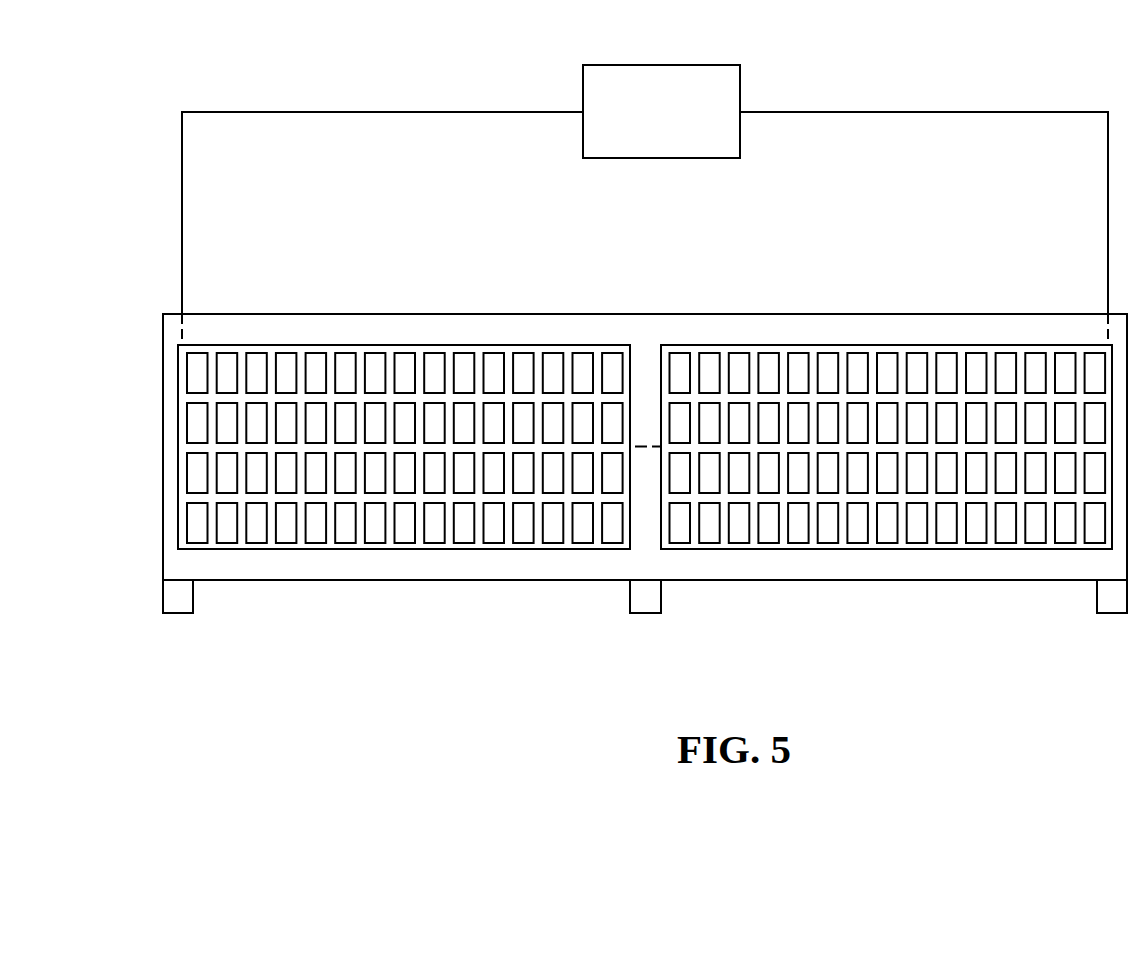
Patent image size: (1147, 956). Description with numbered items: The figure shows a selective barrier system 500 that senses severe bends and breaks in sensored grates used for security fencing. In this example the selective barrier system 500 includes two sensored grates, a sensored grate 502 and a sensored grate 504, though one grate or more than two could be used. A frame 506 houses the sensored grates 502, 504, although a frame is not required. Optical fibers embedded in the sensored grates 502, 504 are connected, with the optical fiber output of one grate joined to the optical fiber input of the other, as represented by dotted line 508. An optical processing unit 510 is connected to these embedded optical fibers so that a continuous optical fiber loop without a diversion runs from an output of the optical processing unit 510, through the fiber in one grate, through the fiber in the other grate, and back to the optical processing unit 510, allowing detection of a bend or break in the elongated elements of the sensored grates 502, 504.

The selective barrier system 500 is at (645, 311).
The sensored grate 502 is at (382, 346).
The sensored grate 504 is at (895, 345).
The frame 506 is at (787, 313).
The dotted line 508 is at (642, 446).
The optical processing unit 510 is at (675, 65).